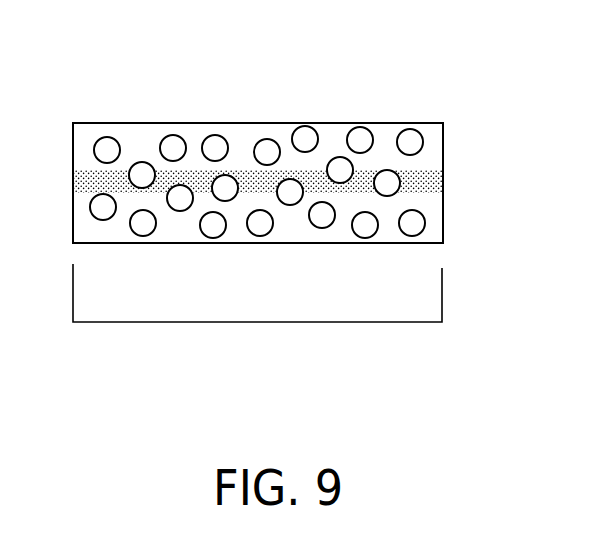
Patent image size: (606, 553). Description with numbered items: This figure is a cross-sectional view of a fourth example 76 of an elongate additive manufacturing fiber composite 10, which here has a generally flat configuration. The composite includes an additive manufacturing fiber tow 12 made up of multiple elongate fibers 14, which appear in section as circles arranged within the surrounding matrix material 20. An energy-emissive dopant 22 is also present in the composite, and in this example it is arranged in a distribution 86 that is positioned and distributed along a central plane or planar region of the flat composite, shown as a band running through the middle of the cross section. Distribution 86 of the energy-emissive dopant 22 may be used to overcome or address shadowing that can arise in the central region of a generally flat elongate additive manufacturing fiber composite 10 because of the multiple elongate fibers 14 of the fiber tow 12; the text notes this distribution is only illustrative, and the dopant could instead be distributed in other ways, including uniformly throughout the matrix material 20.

The elongate additive manufacturing fiber composite 10 is at (242, 189).
The additive manufacturing fiber tow 12 is at (252, 322).
The elongate fibers 14 is at (257, 168).
The matrix material 20 is at (242, 164).
The energy-emissive dopant 22 is at (320, 187).
The fourth example elongate additive manufacturing fiber composite 76 is at (127, 117).
The distribution of energy-emissive dopant 86 is at (430, 165).